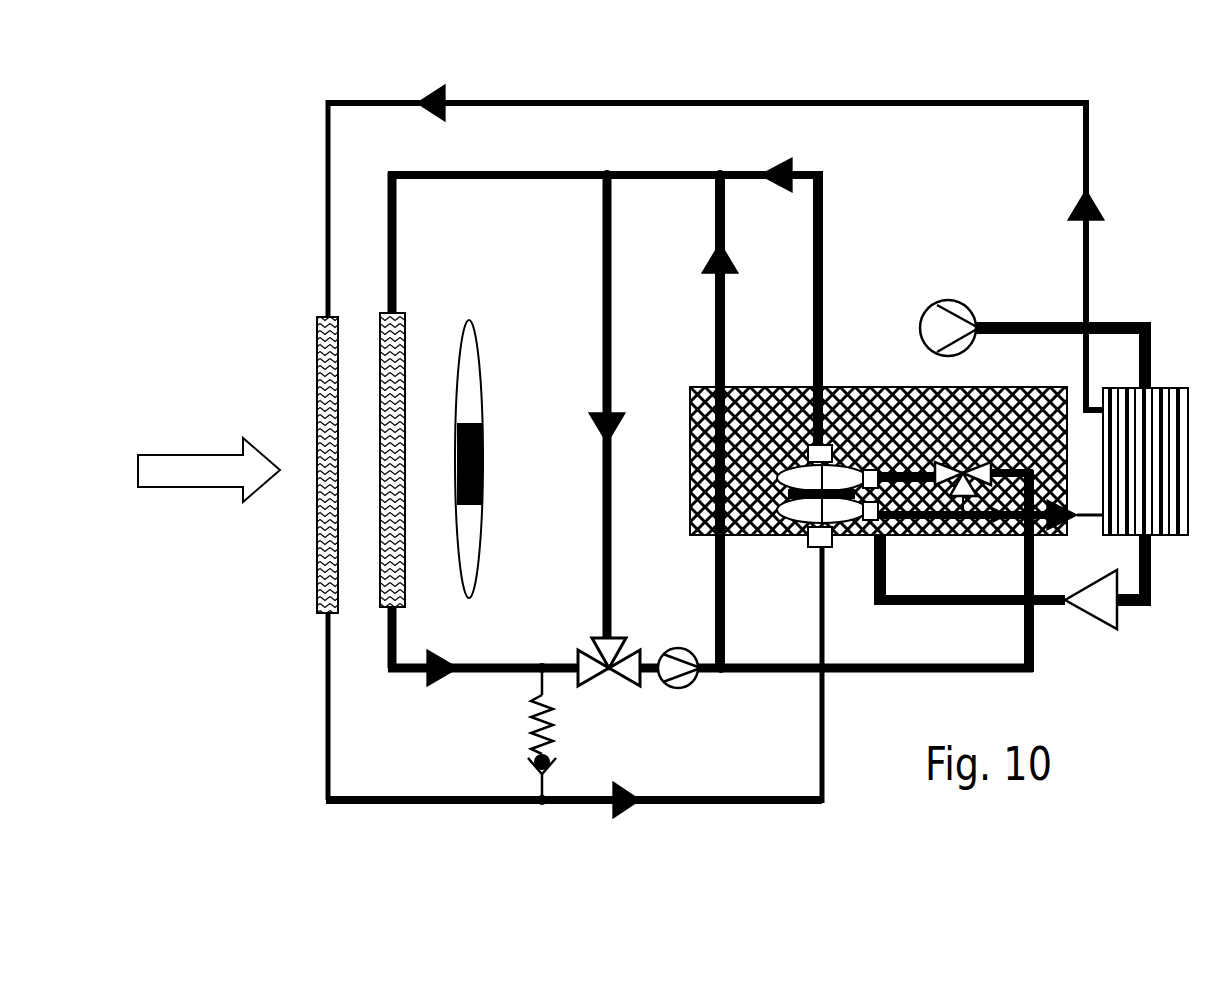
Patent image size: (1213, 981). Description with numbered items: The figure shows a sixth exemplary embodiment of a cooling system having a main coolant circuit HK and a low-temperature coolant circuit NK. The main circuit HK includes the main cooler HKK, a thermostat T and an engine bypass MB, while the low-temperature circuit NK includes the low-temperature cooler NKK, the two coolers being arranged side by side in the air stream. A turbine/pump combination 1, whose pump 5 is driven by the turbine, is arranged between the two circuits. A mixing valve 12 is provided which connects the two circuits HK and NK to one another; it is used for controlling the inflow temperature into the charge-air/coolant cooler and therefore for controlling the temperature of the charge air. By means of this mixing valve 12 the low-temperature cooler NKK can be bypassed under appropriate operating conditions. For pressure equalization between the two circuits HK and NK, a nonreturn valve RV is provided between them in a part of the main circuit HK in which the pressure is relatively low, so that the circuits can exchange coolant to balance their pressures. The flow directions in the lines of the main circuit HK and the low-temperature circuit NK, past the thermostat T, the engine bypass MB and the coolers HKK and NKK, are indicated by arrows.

The low-temperature circuit NK is at (326, 102).
The main circuit HK is at (659, 173).
The low-temperature cooler NKK is at (317, 377).
The main cooler HKK is at (383, 535).
The engine bypass MB is at (600, 492).
The nonreturn valve RV is at (517, 728).
The thermostat T is at (614, 688).
The turbine/pump combination 1 is at (853, 410).
The pump 5 is at (793, 513).
The mixing valve 12 is at (1008, 530).